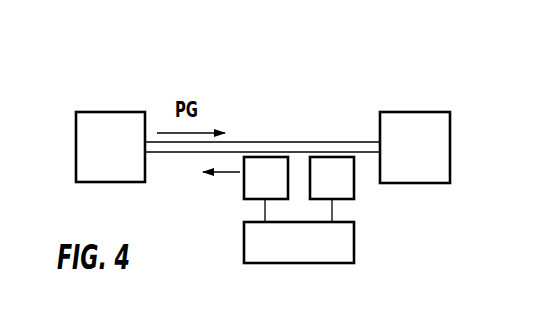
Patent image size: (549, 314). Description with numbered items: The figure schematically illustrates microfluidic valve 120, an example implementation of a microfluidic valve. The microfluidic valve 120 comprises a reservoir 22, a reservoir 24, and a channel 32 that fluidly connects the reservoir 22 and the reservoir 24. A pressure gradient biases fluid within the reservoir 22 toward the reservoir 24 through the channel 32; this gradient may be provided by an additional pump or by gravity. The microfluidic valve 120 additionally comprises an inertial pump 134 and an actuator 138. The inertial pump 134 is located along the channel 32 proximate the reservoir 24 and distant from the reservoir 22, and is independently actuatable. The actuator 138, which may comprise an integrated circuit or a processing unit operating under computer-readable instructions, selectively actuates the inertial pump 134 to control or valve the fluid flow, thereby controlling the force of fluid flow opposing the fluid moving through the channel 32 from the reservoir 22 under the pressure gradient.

The microfluidic valve 120 is at (150, 82).
The reservoir 22 is at (97, 110).
The reservoir 24 is at (402, 111).
The channel 32 is at (290, 140).
The inertial pump 134 is at (250, 200).
The actuator 138 is at (323, 264).